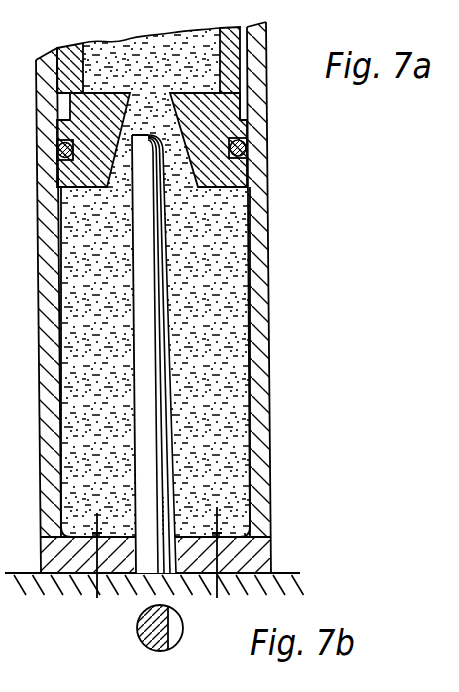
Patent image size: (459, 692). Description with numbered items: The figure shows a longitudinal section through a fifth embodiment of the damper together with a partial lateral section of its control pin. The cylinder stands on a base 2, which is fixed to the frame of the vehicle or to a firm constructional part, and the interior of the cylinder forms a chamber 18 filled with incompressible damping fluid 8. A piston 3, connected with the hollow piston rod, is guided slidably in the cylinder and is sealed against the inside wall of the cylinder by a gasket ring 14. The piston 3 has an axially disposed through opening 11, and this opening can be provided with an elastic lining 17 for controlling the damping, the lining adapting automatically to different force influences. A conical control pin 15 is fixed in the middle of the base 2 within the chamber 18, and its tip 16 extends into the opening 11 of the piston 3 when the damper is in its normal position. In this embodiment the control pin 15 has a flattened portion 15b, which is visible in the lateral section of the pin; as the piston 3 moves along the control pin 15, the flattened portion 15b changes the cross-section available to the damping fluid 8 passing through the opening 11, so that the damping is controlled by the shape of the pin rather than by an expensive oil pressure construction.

In FIG. 7A, the base 2 is at (223, 538).
In FIG. 7A, the piston 3 is at (236, 172).
In FIG. 7A, the damping fluid 8 is at (238, 343).
In FIG. 7A, the through opening 11 is at (138, 98).
In FIG. 7A, the gasket ring 14 is at (240, 147).
In FIG. 7A, the control pin 15 is at (157, 405).
In FIG. 7B, the control pin 15 is at (140, 624).
In FIG. 7B, the flattened portion of control pin 15b is at (175, 641).
In FIG. 7A, the tip of control pin 16 is at (152, 127).
In FIG. 7A, the elastic lining 17 is at (236, 128).
In FIG. 7A, the chamber 18 is at (230, 300).